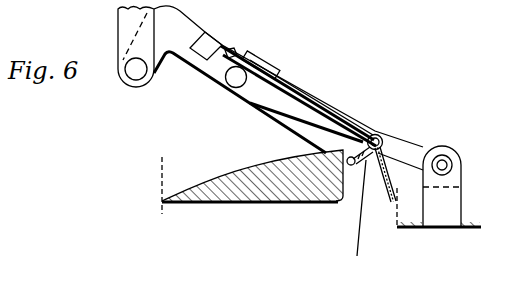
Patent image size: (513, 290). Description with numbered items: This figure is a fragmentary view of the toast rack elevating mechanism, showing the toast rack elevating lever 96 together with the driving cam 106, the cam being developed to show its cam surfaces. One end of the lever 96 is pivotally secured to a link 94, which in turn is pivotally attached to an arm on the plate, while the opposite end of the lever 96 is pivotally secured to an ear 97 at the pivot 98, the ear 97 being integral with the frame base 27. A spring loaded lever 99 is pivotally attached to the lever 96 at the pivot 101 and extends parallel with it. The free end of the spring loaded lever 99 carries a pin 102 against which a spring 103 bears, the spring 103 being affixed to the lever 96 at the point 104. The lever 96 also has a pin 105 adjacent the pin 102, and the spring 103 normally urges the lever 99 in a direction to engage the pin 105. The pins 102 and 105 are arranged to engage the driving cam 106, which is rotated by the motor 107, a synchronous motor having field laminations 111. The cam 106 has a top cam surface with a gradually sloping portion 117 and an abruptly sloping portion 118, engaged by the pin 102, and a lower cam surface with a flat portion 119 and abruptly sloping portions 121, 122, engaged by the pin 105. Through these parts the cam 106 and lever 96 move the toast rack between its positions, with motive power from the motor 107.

The link 94 is at (120, 27).
The toast rack elevating lever 96 is at (240, 38).
The spring attachment point 104 is at (201, 40).
The spring 103 is at (268, 80).
The pivot 101 is at (237, 78).
The spring loaded lever 99 is at (262, 106).
The pin 102 is at (380, 136).
The pin 105 is at (348, 164).
The abruptly sloping portion 118 is at (380, 215).
The abruptly sloping portion 122 is at (349, 219).
The gradually sloping portion 117 is at (252, 166).
The driving cam 106 is at (230, 196).
The flat portion 119 is at (263, 207).
The abruptly sloping portion 121 is at (341, 204).
The ear 97 is at (450, 195).
The pivot 98 is at (446, 160).
The frame base 27 is at (470, 230).
The field laminations 111 is at (407, 4).
The motor 107 is at (434, 0).